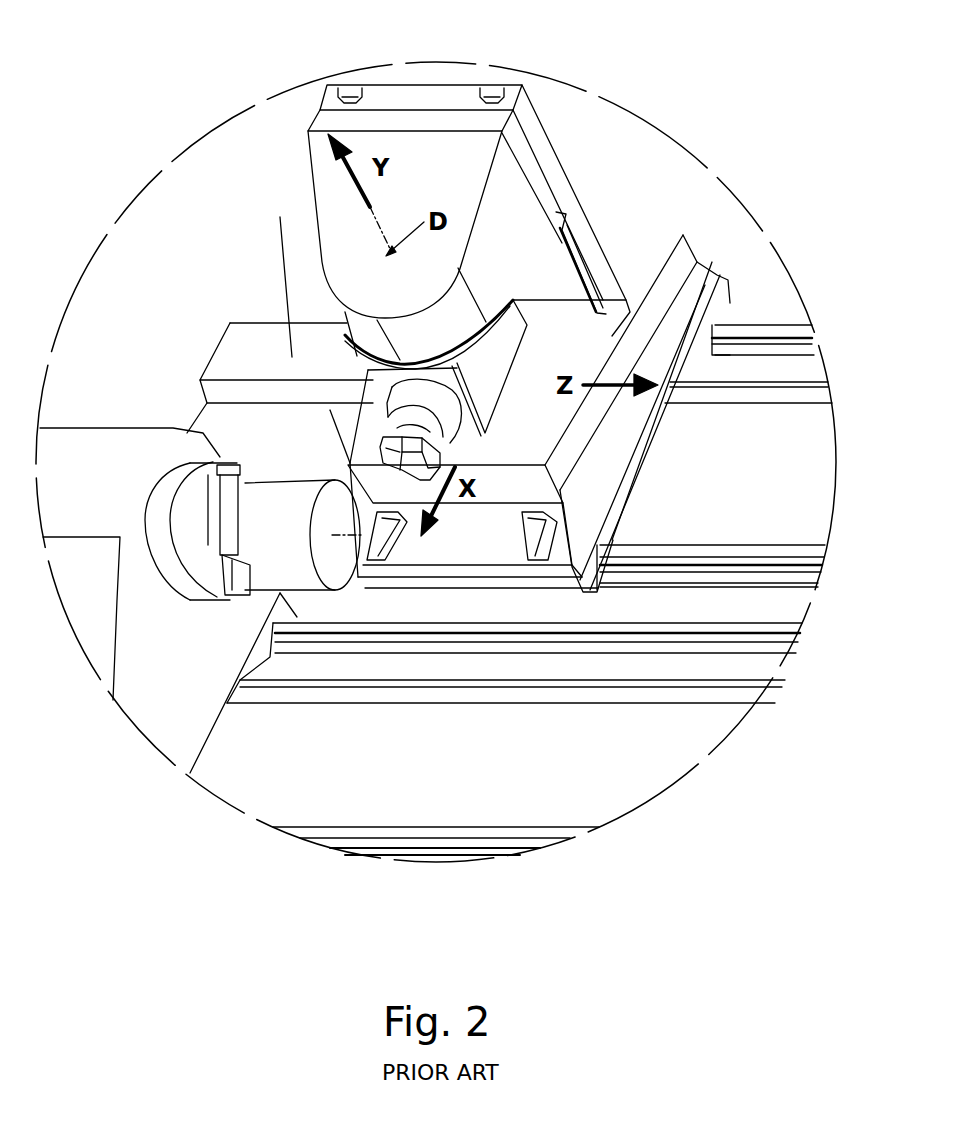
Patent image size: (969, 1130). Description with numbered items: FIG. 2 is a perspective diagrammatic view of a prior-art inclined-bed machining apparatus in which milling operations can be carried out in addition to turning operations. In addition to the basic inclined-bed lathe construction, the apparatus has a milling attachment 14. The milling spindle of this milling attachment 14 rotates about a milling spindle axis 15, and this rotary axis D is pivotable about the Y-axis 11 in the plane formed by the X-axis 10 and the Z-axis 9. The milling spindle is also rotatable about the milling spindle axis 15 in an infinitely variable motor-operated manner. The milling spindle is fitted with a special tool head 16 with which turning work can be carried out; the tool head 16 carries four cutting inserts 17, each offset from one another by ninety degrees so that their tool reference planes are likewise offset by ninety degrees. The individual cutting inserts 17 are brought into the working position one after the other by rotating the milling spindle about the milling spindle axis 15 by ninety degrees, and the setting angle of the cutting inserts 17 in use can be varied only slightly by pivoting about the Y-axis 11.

The Z-axis 9 is at (683, 235).
The X-axis 10 is at (418, 490).
The Y-axis 11 is at (348, 167).
The milling attachment 14 is at (495, 355).
The milling spindle axis 15 is at (395, 495).
The tool head 16 is at (418, 465).
The cutting inserts 17 is at (400, 442).